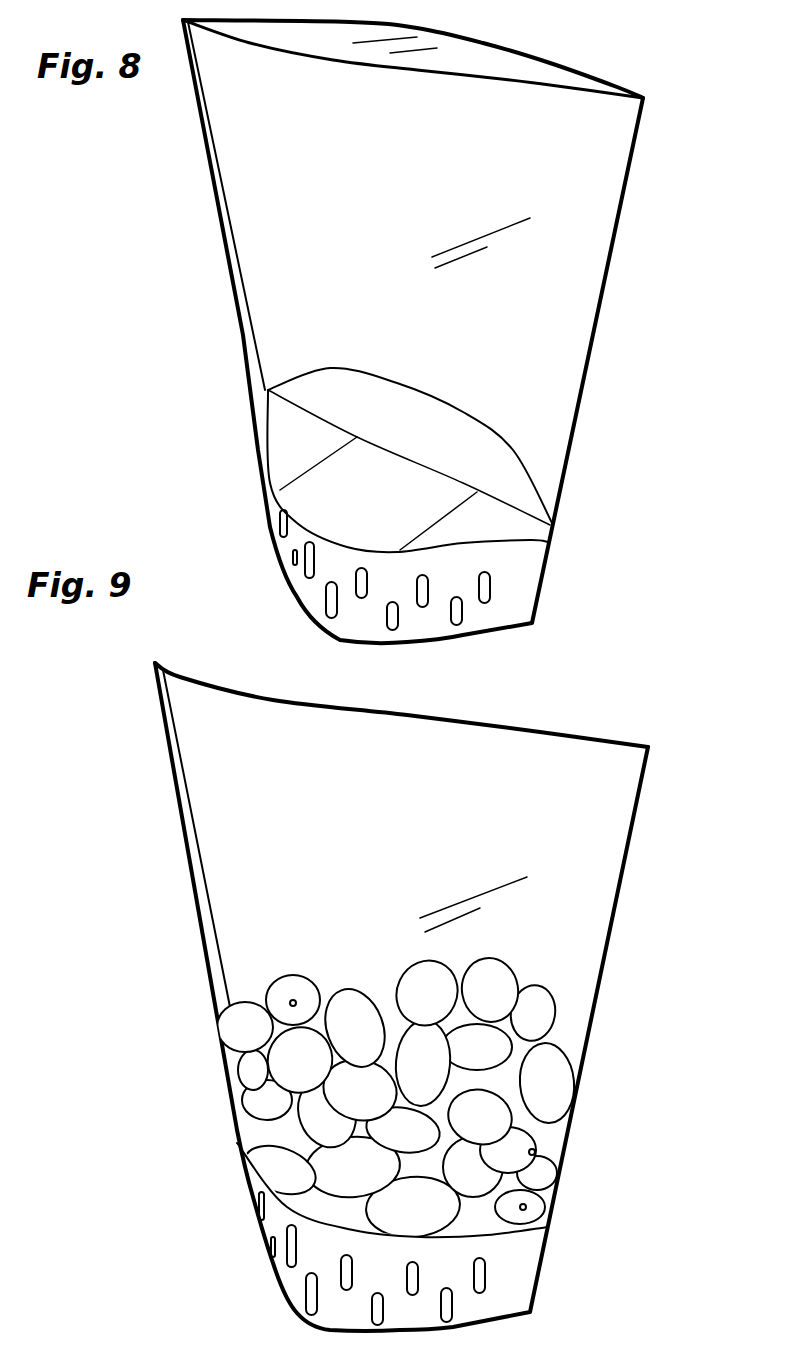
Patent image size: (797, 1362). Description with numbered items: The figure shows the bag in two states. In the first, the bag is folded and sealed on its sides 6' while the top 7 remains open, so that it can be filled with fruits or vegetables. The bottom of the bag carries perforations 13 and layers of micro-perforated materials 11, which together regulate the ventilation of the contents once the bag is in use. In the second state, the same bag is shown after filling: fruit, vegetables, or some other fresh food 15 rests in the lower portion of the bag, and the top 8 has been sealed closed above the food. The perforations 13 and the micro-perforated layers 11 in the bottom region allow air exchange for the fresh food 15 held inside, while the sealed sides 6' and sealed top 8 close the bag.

In FIG. 8, the open top 7 is at (682, 24).
In FIG. 8, the sealed sides 6' is at (459, 331).
In FIG. 8, the layers of micro-perforated materials 11 is at (370, 482).
In FIG. 8, the perforations 13 is at (470, 618).
In FIG. 9, the sealed top 8 is at (530, 767).
In FIG. 9, the fresh food 15 is at (271, 1100).